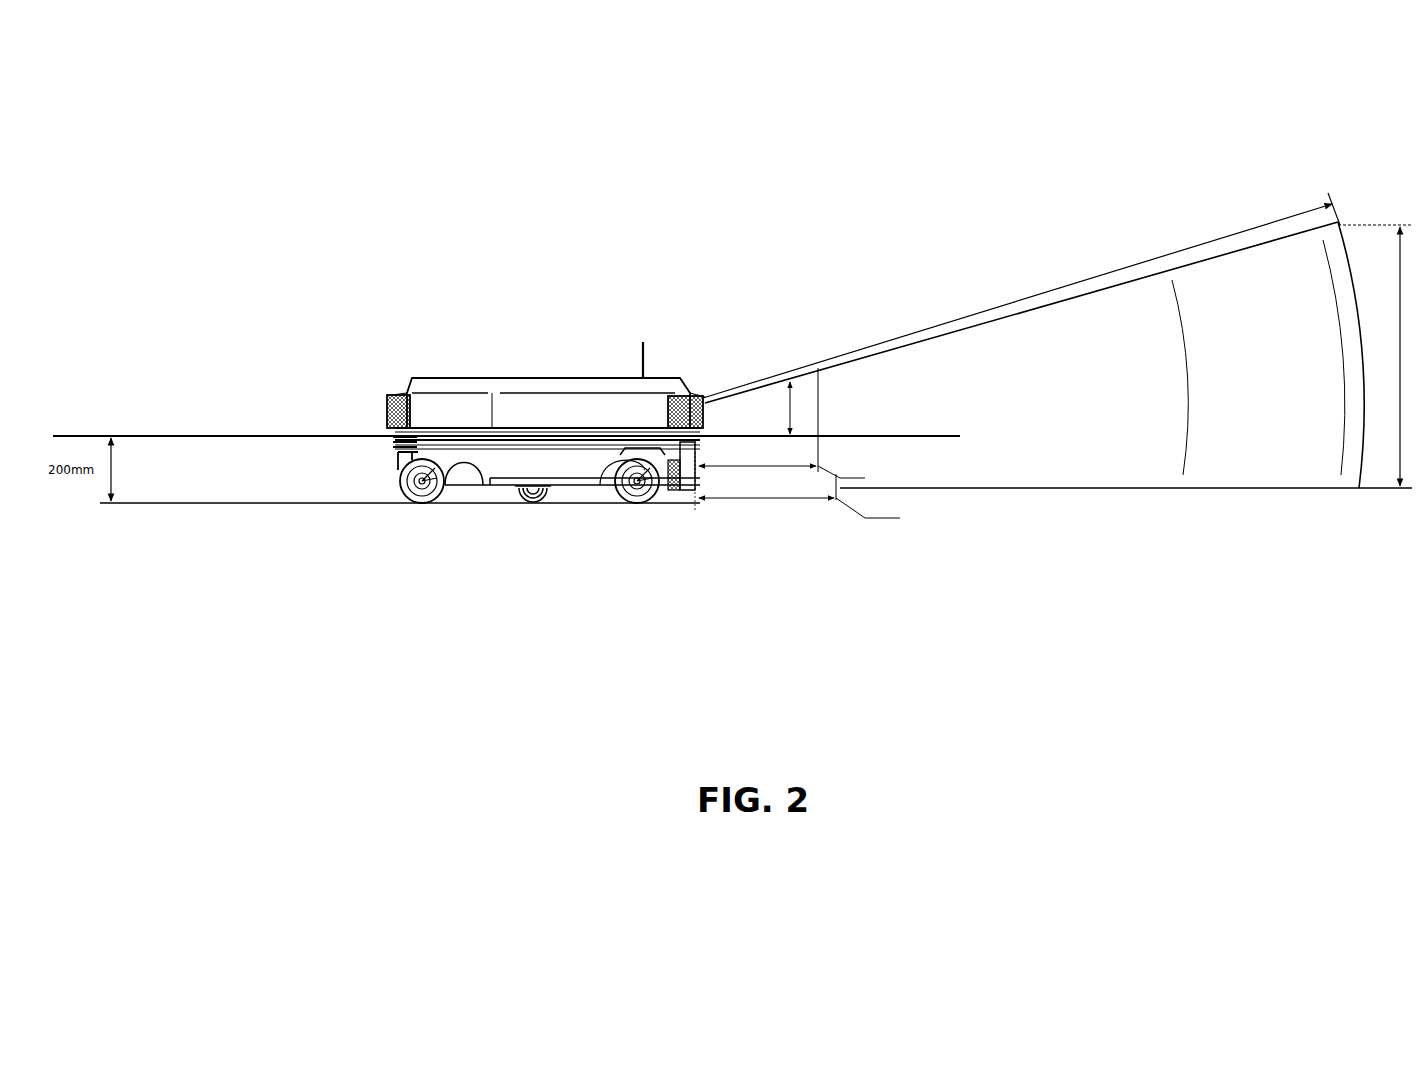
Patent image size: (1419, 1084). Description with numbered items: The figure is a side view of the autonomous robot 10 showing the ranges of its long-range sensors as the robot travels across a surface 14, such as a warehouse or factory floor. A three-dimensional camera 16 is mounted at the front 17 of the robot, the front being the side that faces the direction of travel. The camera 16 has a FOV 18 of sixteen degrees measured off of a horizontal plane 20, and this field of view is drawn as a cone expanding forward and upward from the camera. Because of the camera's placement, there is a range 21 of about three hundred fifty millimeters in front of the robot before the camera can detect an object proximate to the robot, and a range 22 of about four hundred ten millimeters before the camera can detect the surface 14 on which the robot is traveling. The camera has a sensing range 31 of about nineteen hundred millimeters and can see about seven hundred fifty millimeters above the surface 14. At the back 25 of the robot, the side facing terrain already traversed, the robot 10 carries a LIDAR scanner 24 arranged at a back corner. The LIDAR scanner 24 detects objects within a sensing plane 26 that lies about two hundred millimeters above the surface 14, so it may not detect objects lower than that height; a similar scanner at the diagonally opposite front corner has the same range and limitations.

The autonomous robot 10 is at (530, 378).
The surface 14 is at (250, 503).
The 3D camera 16 is at (700, 403).
The front 17 is at (685, 496).
The FOV 18 is at (797, 392).
The horizontal plane 20 is at (935, 436).
The range 21 is at (804, 470).
The range 22 is at (735, 495).
The LIDAR scanner 24 is at (385, 395).
The back 25 is at (376, 462).
The sensing plane 26 is at (178, 436).
The sensing range 31 is at (983, 312).